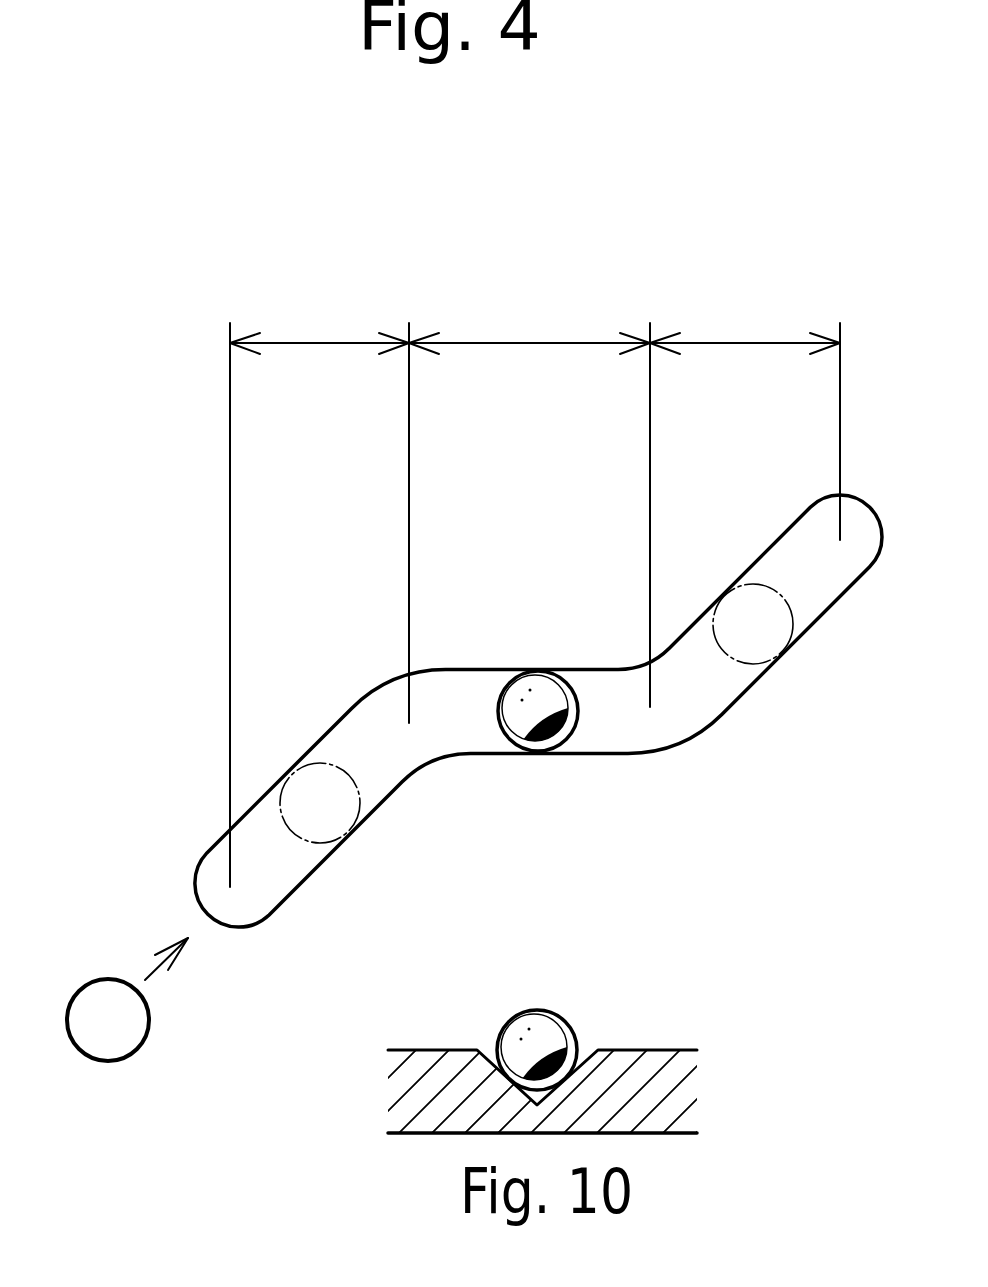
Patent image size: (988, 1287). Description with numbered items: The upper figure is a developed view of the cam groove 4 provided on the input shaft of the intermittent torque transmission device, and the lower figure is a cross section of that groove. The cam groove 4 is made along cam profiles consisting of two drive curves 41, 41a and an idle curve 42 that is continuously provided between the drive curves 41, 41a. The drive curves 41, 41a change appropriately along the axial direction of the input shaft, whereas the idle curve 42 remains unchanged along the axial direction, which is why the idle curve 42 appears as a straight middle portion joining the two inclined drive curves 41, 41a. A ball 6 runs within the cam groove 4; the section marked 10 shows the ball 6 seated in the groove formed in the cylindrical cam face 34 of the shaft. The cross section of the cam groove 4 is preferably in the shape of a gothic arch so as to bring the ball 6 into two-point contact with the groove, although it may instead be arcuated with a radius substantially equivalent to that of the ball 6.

In FIG. 4, the cam groove 4 is at (633, 753).
In FIG. 4, the drive curve 41 is at (812, 590).
In FIG. 4, the drive curve 41a is at (277, 912).
In FIG. 4, the idle curve 42 is at (463, 728).
In FIG. 4, the ball 6 is at (560, 753).
In FIG. 10, the ball 6 is at (570, 1022).
In FIG. 4, the section line of FIG. 10 is at (536, 790).
In FIG. 10, the cylindrical cam face 34 is at (678, 1092).